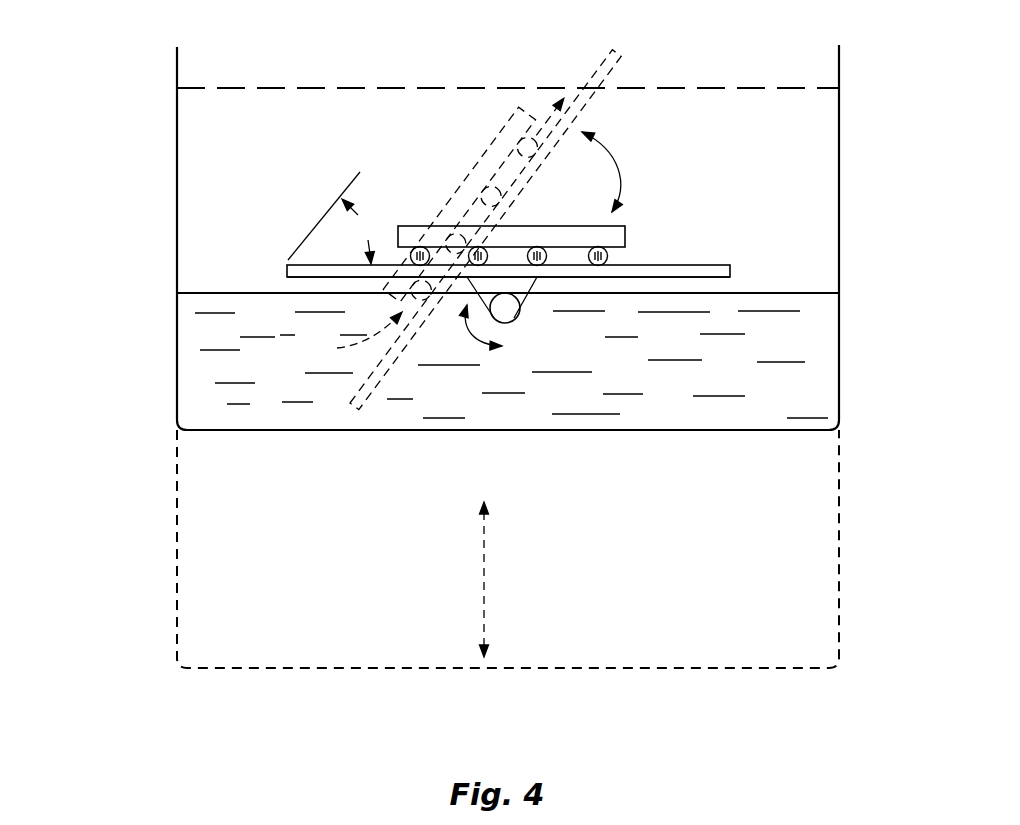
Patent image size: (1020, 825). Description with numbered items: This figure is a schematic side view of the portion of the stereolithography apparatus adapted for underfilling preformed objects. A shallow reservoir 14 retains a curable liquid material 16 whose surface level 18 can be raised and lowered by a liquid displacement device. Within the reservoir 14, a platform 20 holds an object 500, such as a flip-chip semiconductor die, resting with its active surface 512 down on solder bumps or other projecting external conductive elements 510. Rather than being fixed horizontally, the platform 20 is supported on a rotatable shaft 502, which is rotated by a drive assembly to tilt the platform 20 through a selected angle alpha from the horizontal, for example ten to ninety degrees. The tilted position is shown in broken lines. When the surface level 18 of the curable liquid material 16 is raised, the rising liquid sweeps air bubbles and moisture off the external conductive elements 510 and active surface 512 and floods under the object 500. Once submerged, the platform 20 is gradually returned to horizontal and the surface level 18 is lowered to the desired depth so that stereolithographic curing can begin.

The reservoir 14 is at (177, 322).
The curable liquid material 16 is at (816, 340).
The surface level 18 is at (753, 88).
The platform 20 is at (733, 269).
The object 500 is at (604, 217).
The rotatable shaft 502 is at (508, 320).
The external conductive elements 510 is at (606, 266).
The active surface 512 is at (578, 243).